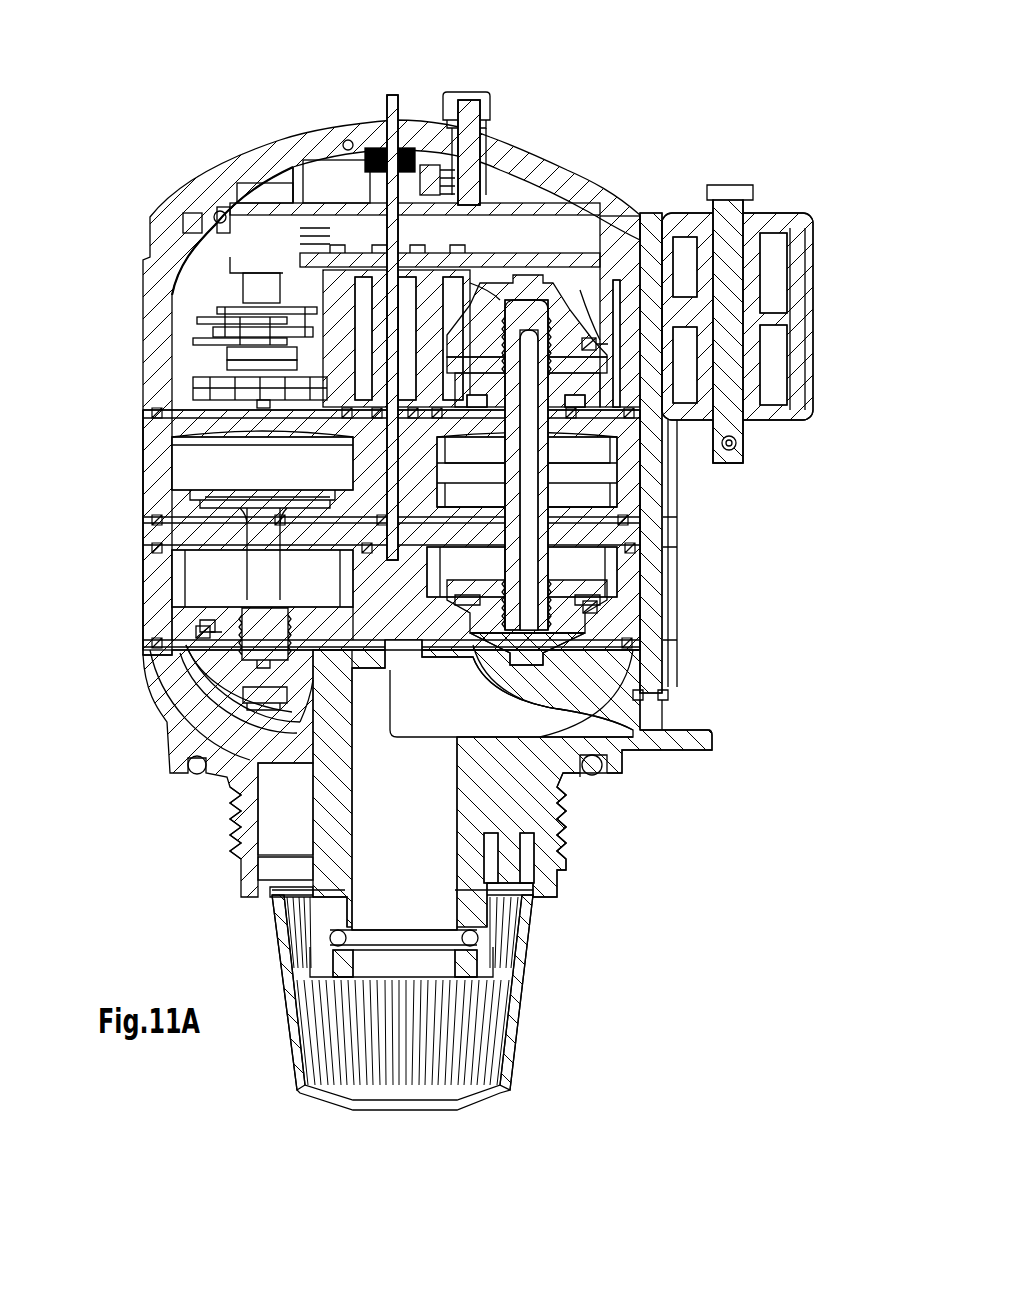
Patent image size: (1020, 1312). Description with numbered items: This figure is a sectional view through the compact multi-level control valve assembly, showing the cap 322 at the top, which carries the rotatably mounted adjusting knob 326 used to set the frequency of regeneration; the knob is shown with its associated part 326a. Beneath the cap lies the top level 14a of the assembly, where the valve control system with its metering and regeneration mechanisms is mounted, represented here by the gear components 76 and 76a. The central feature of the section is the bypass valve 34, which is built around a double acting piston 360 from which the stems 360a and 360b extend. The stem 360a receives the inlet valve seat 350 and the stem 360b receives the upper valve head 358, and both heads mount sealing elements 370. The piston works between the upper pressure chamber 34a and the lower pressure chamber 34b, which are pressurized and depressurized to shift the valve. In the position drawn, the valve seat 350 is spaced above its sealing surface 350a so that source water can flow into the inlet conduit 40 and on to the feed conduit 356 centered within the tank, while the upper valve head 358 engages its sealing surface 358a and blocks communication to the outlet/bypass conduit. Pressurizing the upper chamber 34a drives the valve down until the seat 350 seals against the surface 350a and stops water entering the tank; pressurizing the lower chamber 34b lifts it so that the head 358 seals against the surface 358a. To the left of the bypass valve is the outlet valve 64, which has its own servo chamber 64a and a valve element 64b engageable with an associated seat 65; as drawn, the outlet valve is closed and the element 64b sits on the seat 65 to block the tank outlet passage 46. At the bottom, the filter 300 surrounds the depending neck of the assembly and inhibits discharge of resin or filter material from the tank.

The cap 322 is at (263, 163).
The adjusting knob 326 is at (483, 105).
The cap stem 326a is at (477, 153).
The upper valve head 358 is at (557, 325).
The sealing surface 358a is at (585, 330).
The sealing elements 370 is at (590, 347).
The gear train 76 is at (199, 360).
The gear 76a is at (201, 380).
The servo chamber 64a is at (209, 461).
The outlet valve 64 is at (232, 578).
The seat 65 is at (228, 652).
The valve element 64b is at (292, 705).
The tank outlet passage 46 is at (229, 784).
The stem 360b is at (597, 446).
The upper pressure chamber 34a is at (597, 473).
The double acting piston 360 is at (600, 502).
The lower pressure chamber 34b is at (553, 493).
The bypass valve 34 is at (540, 563).
The stem 360a is at (572, 600).
The valve seat 350 is at (553, 630).
The sealing surface 350a is at (490, 720).
The inlet conduit 40 is at (563, 780).
The top level 14a is at (563, 817).
The feed conduit 356 is at (410, 897).
The filter 300 is at (508, 1020).